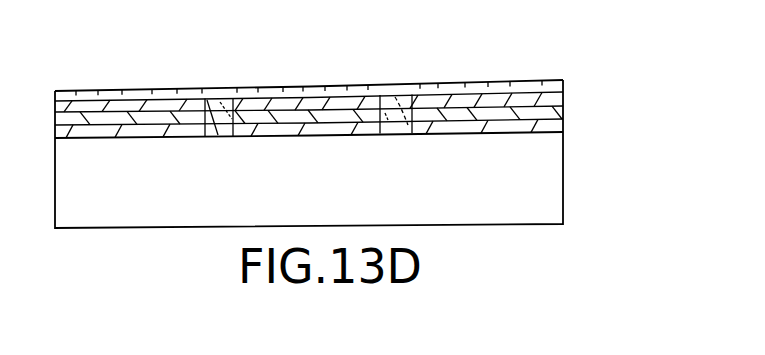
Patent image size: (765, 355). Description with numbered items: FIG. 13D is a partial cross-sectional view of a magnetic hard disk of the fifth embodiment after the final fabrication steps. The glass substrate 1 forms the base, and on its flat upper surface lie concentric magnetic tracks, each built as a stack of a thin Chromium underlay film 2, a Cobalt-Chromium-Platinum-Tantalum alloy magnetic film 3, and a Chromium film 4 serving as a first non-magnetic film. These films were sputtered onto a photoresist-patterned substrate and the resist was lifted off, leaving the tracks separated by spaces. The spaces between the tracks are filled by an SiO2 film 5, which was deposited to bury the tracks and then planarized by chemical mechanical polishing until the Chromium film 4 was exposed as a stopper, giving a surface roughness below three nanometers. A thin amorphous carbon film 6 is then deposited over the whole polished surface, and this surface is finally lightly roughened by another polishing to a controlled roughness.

The glass substrate 1 is at (563, 172).
The Chromium film 2 is at (563, 126).
The magnetic film 3 is at (563, 108).
The Chromium film 4 is at (563, 97).
The SiO2 film 5 is at (395, 97).
The via / filled opening 6 is at (512, 83).